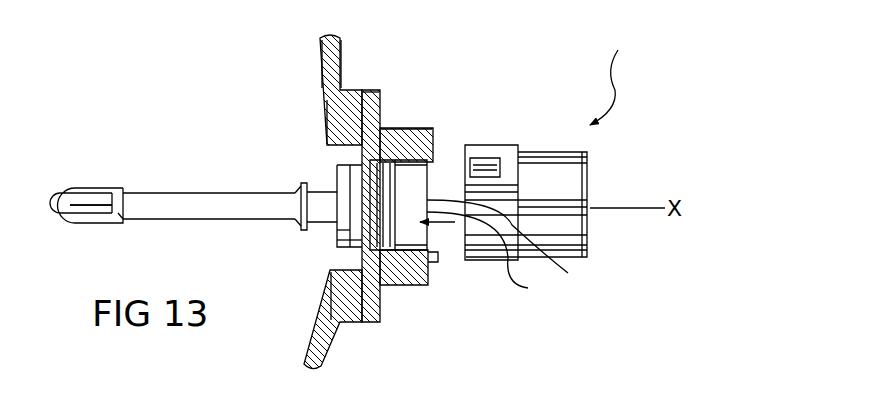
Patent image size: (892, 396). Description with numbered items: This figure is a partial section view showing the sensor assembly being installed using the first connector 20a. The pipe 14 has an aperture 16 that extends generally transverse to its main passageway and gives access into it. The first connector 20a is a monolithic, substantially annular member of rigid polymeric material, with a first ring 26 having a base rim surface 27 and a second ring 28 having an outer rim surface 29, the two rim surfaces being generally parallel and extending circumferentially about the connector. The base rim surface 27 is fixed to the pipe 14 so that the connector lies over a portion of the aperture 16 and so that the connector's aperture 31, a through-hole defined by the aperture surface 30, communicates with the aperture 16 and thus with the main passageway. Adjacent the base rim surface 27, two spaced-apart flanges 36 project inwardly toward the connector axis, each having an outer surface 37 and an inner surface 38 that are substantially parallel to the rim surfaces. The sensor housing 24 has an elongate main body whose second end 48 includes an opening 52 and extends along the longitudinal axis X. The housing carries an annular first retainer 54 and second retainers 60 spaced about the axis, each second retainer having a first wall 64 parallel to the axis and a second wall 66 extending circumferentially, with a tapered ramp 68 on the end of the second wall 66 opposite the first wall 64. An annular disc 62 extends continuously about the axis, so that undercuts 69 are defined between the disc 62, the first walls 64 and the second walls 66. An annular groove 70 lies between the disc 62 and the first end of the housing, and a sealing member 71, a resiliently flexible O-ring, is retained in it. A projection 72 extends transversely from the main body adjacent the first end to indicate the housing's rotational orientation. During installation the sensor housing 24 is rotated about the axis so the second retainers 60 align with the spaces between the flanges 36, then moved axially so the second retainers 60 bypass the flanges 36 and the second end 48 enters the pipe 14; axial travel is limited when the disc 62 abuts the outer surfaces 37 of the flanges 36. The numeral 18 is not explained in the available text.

The pipe 14 is at (317, 341).
The aperture 16 is at (328, 272).
The fuel injector assembly 18 is at (616, 80).
The first connector 20a is at (424, 124).
The sensor housing 24 is at (512, 143).
The first ring 26 is at (368, 92).
The base rim surface 27 is at (344, 58).
The second ring 28 is at (418, 286).
The outer rim surface 29 is at (428, 160).
The aperture surface 30 is at (431, 282).
The aperture 31 is at (491, 256).
The flanges 36 is at (302, 195).
The outer surface 37 is at (398, 165).
The inner surface 38 is at (326, 105).
The second end 48 is at (97, 220).
The opening 52 is at (95, 198).
The first retainer 54 is at (300, 181).
The second retainers 60 is at (323, 150).
The annular disc 62 is at (378, 308).
The first wall 64 is at (337, 252).
The second wall 66 is at (288, 219).
The tapered ramp 68 is at (330, 82).
The undercuts 69 is at (337, 229).
The annular groove 70 is at (510, 245).
The sealing member 71 is at (405, 128).
The projection 72 is at (446, 257).